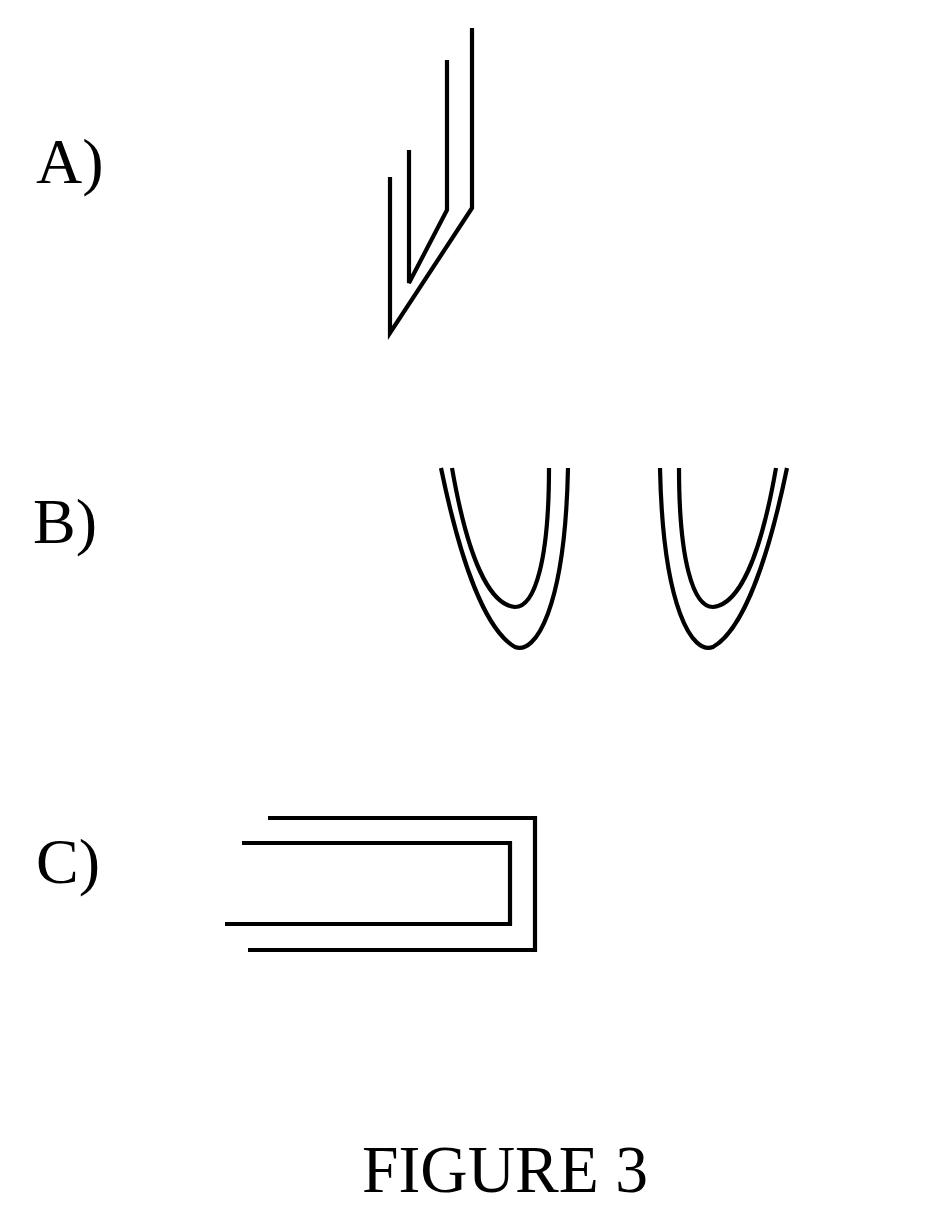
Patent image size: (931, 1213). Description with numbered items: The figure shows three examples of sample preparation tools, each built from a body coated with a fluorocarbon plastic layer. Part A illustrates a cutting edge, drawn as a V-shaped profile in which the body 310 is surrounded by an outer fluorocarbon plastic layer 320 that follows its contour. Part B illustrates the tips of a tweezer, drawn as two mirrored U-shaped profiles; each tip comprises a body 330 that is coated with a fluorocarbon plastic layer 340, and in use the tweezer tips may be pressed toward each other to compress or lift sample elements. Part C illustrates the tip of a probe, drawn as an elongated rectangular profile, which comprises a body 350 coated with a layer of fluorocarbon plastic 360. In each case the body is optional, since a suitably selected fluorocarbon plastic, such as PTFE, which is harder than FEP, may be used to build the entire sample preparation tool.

The body 310 is at (423, 138).
The fluorocarbon plastic layer 320 is at (470, 192).
The bodies 330 is at (715, 488).
The fluorocarbon plastic layer 340 is at (688, 615).
The body 350 is at (362, 897).
The layer of fluorocarbon plastic 360 is at (450, 935).